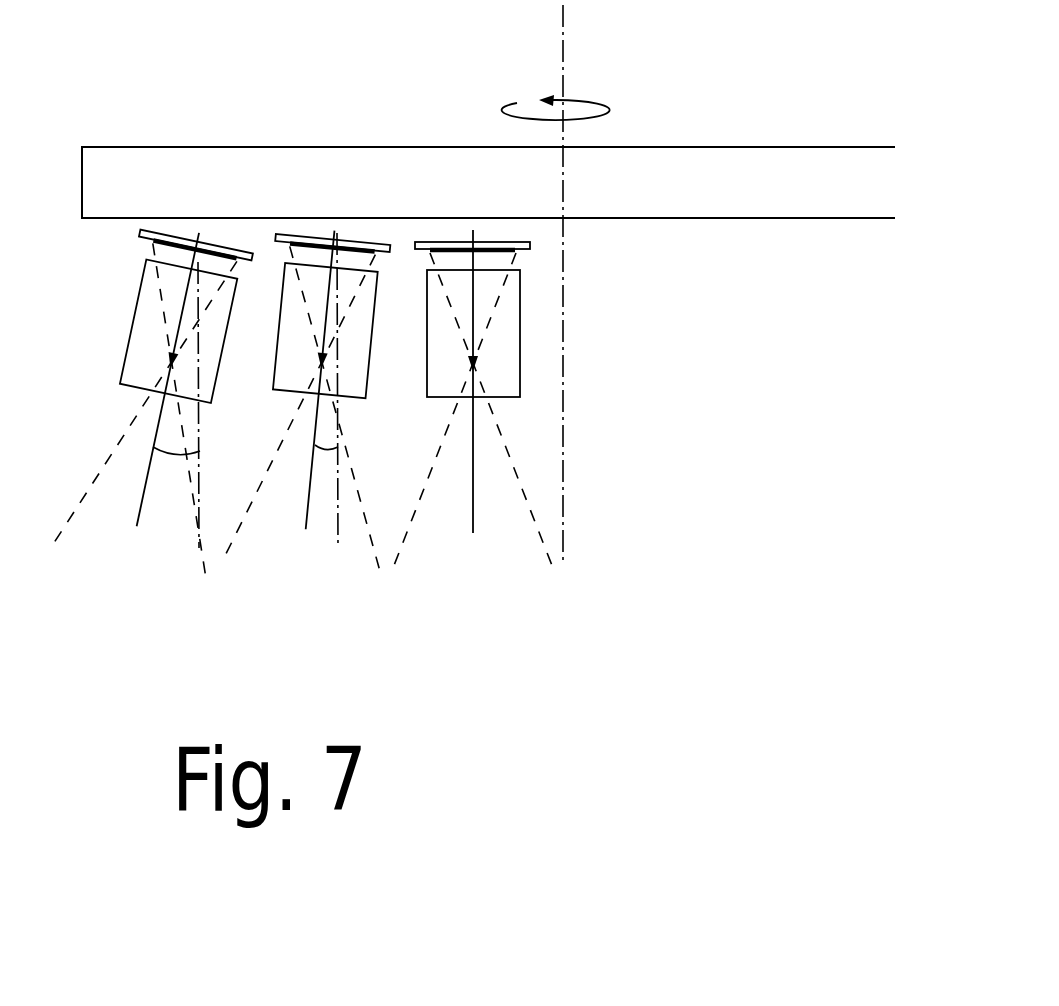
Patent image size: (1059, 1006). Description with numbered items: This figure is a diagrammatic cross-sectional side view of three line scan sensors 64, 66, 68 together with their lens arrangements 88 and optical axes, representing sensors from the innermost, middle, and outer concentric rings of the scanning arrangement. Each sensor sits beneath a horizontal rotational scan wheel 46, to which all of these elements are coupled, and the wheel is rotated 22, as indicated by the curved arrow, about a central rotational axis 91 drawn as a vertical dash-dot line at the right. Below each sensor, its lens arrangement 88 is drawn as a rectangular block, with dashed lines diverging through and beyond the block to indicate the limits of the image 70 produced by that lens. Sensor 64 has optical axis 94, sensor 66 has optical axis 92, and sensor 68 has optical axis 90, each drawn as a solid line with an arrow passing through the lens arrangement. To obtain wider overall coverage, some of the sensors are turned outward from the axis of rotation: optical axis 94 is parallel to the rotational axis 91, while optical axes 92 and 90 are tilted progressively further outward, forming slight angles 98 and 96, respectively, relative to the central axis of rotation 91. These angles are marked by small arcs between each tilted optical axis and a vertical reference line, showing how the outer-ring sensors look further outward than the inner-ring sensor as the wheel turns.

The rotation 22 is at (582, 100).
The rotational scan wheel 46 is at (120, 152).
The line scan sensor 64 is at (440, 247).
The line scan sensor 66 is at (307, 247).
The line scan sensor 68 is at (167, 240).
The limits of the image 70 is at (105, 462).
The lens arrangement 88 is at (140, 328).
The optical axis 90 is at (137, 512).
The rotational axis 91 is at (562, 25).
The optical axis 92 is at (308, 527).
The optical axis 94 is at (473, 525).
The angle 96 is at (185, 441).
The angle 98 is at (318, 445).